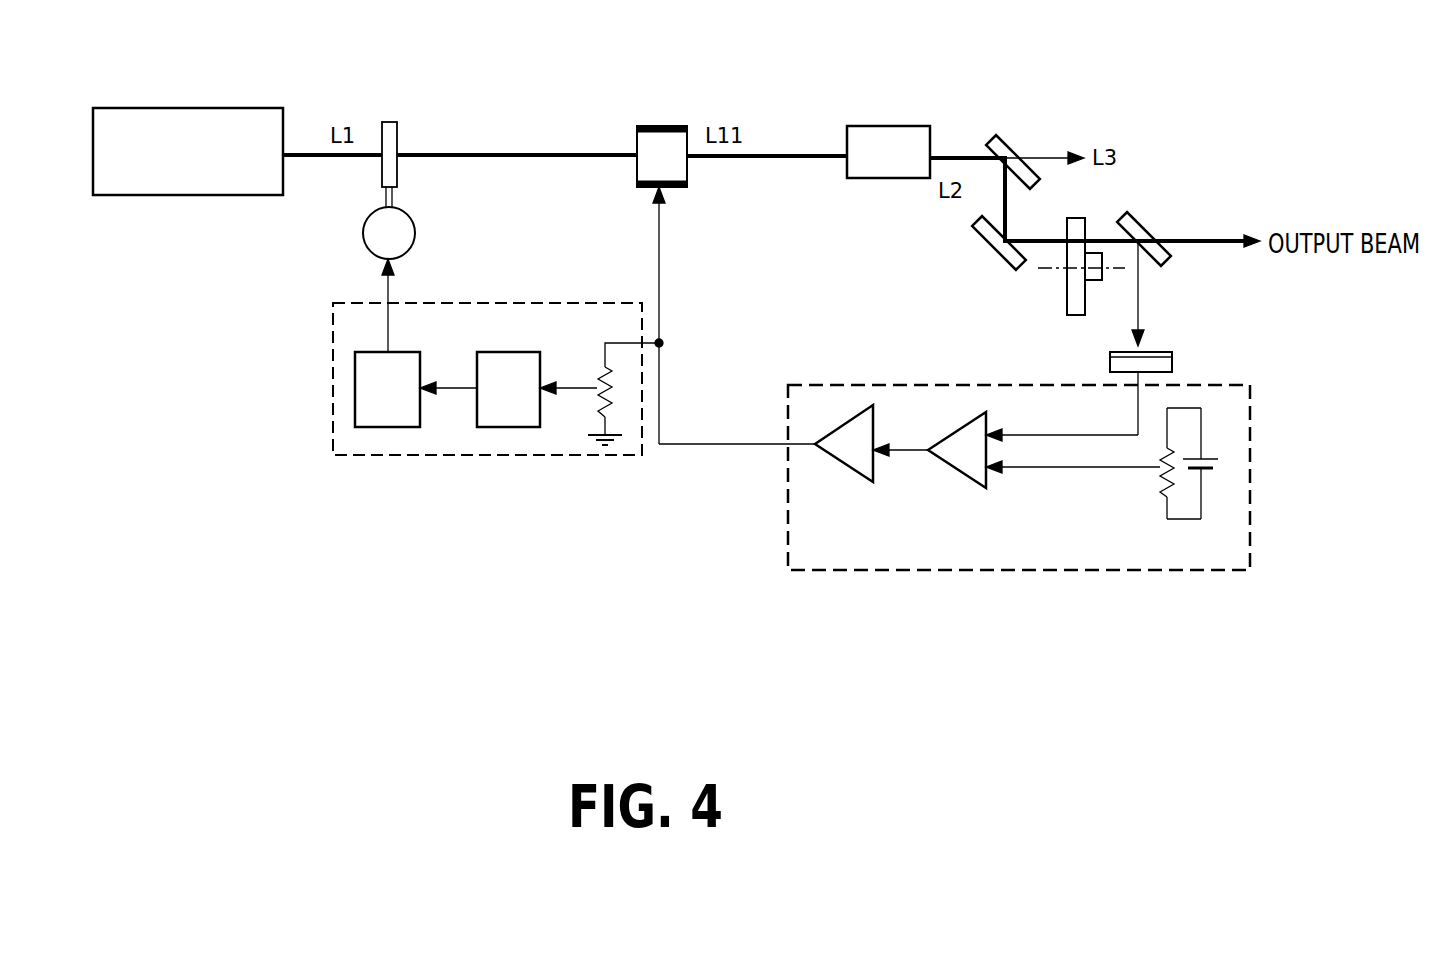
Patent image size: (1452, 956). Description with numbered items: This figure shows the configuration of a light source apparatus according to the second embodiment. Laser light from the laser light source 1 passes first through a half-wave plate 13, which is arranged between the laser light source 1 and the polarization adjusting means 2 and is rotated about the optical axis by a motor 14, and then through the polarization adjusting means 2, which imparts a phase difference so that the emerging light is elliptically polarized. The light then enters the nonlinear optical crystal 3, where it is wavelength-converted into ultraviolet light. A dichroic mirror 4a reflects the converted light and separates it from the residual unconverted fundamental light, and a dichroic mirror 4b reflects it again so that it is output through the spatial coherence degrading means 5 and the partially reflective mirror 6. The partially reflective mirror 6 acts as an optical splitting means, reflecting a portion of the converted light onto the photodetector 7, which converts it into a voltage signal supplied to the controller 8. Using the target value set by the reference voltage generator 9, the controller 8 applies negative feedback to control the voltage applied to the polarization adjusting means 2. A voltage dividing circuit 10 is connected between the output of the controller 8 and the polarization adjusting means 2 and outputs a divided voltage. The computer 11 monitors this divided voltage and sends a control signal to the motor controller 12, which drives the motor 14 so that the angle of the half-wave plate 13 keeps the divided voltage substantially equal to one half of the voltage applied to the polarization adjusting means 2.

The laser light source 1 is at (185, 108).
The polarization adjusting means 2 is at (658, 126).
The nonlinear optical crystal 3 is at (882, 126).
The dichroic mirror 4a is at (996, 138).
The dichroic mirror 4b is at (984, 250).
The spatial coherence degrading means 5 is at (1067, 298).
The partially reflective mirror 6 is at (1133, 216).
The photodetector 7 is at (1173, 362).
The controller 8 is at (1066, 570).
The reference voltage generator 9 is at (1160, 488).
The voltage dividing circuit 10 is at (618, 405).
The computer 11 is at (502, 427).
The motor controller 12 is at (372, 427).
The half-wave plate 13 is at (388, 122).
The motor 14 is at (415, 240).